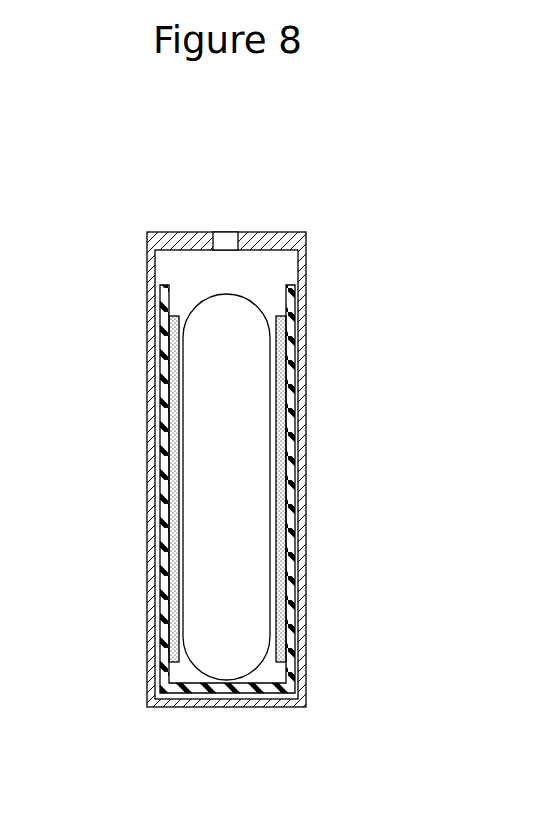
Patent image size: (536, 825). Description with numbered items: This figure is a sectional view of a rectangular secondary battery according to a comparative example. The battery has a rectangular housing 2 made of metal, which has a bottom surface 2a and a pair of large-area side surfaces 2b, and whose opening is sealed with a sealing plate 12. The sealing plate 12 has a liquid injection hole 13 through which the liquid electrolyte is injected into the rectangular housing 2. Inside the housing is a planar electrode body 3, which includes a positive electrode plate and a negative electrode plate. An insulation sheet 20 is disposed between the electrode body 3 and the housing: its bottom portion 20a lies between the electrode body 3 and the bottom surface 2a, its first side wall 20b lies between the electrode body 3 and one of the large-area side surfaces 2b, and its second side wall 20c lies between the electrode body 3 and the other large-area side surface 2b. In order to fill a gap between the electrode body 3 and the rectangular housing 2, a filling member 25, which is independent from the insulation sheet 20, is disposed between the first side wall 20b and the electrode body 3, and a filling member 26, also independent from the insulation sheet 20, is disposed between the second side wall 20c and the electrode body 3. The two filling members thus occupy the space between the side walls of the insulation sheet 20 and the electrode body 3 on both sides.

The rectangular housing 2 is at (231, 467).
The bottom surface 2a is at (260, 703).
The large-area side surface 2b is at (307, 280).
The electrode body 3 is at (240, 548).
The sealing plate 12 is at (273, 242).
The liquid injection hole 13 is at (236, 238).
The insulation sheet 20 is at (228, 530).
The bottom portion 20a is at (188, 690).
The first side wall 20b is at (163, 470).
The second side wall 20c is at (292, 405).
The filling member 25 is at (173, 560).
The filling member 26 is at (280, 490).